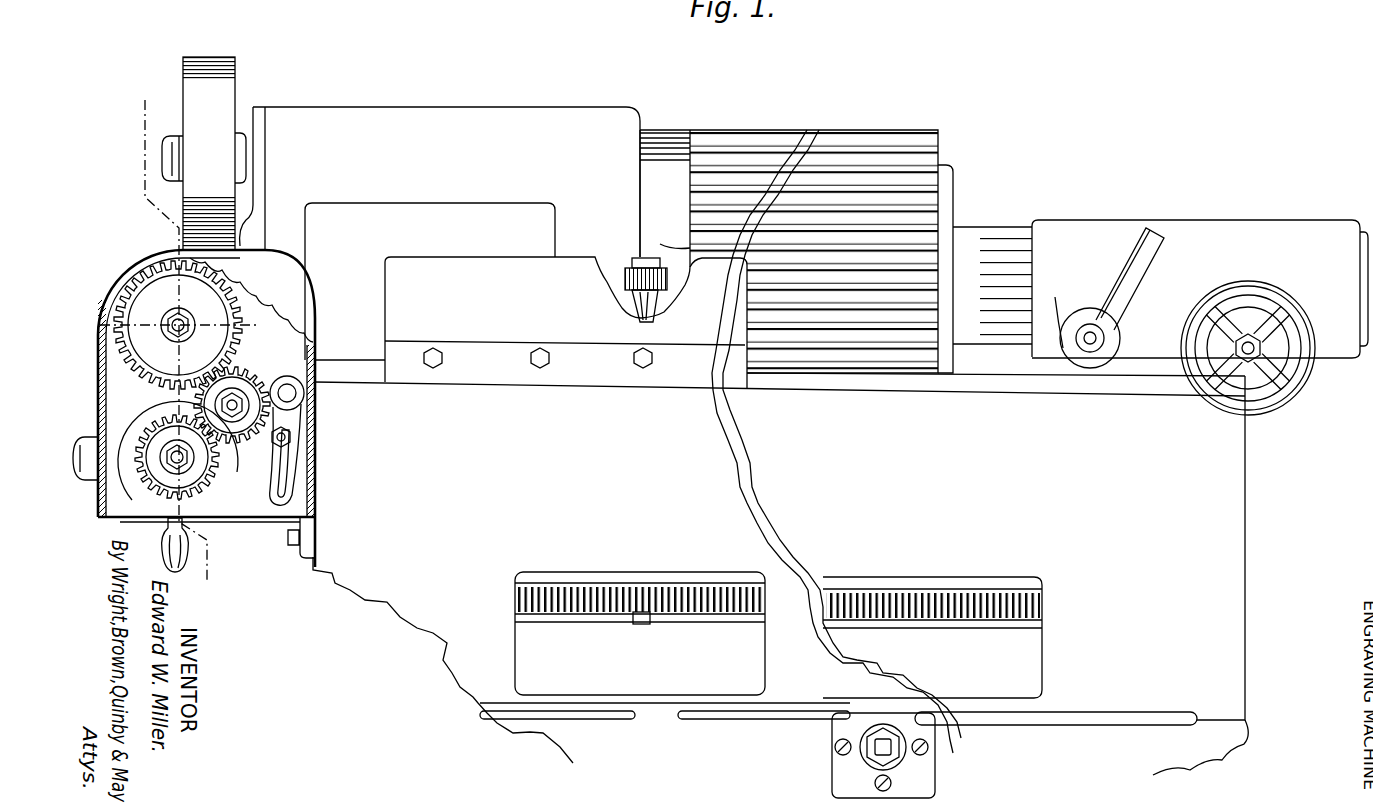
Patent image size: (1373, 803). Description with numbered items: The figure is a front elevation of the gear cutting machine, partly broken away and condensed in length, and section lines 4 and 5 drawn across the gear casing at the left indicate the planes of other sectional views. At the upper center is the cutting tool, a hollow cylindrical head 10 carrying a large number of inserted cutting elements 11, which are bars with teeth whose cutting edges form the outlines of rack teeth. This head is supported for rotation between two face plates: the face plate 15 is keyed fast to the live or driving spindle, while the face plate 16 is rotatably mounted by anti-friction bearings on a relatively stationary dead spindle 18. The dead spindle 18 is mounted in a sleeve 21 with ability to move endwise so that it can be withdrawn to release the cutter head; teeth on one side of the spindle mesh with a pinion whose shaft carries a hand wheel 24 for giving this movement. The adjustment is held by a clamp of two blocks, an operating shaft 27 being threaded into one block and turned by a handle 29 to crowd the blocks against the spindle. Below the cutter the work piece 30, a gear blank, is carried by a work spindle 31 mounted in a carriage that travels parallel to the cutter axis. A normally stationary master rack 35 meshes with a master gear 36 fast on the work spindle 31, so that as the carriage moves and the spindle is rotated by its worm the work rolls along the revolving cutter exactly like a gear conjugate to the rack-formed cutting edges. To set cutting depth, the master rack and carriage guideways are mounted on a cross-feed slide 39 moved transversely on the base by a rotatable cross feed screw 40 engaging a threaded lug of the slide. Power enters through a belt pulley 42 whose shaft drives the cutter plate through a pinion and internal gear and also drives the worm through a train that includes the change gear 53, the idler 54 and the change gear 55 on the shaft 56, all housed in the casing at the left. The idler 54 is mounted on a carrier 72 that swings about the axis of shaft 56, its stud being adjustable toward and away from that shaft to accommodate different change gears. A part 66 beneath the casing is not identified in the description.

The section line 4- 4 is at (174, 341).
The section line 5- 5 is at (172, 325).
The cylindrical head 10 is at (696, 188).
The cutting elements 11 is at (700, 200).
The face plate 15 is at (665, 140).
The face plate 16 is at (950, 196).
The dead spindle 18 is at (1000, 258).
The sleeve 21 is at (1080, 232).
The hand wheel 24 is at (1297, 387).
The operating shaft 27 is at (1077, 350).
The handle 29 is at (1143, 252).
The work piece 30 is at (637, 270).
The work spindle 31 is at (633, 302).
The master rack 35 is at (527, 599).
The master gear 36 is at (648, 622).
The cross-feed slide 39 is at (780, 452).
The cross feed screw 40 is at (862, 747).
The belt pulley 42 is at (222, 96).
The gear 53 is at (163, 356).
The idler 54 is at (234, 384).
The gear 55 is at (204, 467).
The shaft 56 is at (165, 468).
The control knob 66 is at (171, 521).
The carrier 72 is at (288, 385).